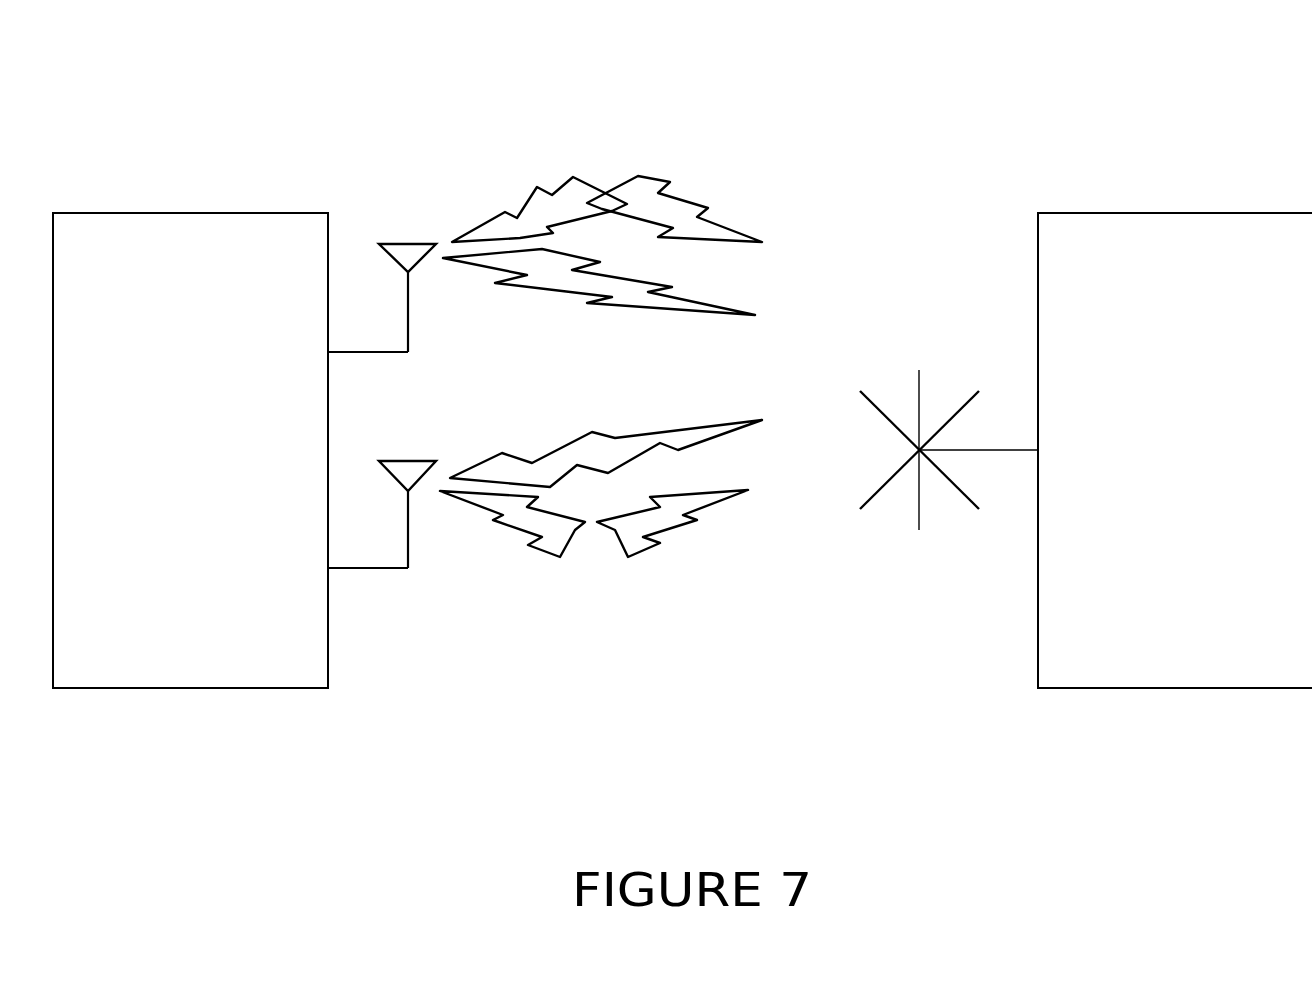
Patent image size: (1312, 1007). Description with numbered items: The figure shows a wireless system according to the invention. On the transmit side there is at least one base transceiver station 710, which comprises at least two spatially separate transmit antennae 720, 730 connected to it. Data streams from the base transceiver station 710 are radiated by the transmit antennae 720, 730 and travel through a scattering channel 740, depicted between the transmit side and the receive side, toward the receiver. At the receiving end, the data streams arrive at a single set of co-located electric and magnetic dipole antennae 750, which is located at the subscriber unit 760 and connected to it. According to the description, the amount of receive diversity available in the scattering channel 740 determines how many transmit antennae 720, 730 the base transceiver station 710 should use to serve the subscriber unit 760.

The base transceiver station 710 is at (310, 671).
The transmit antenna 720 is at (408, 558).
The transmit antenna 730 is at (408, 297).
The scattering channel 740 is at (626, 125).
The co-located electric and magnetic dipole antennae 750 is at (882, 562).
The subscriber unit 760 is at (1299, 678).